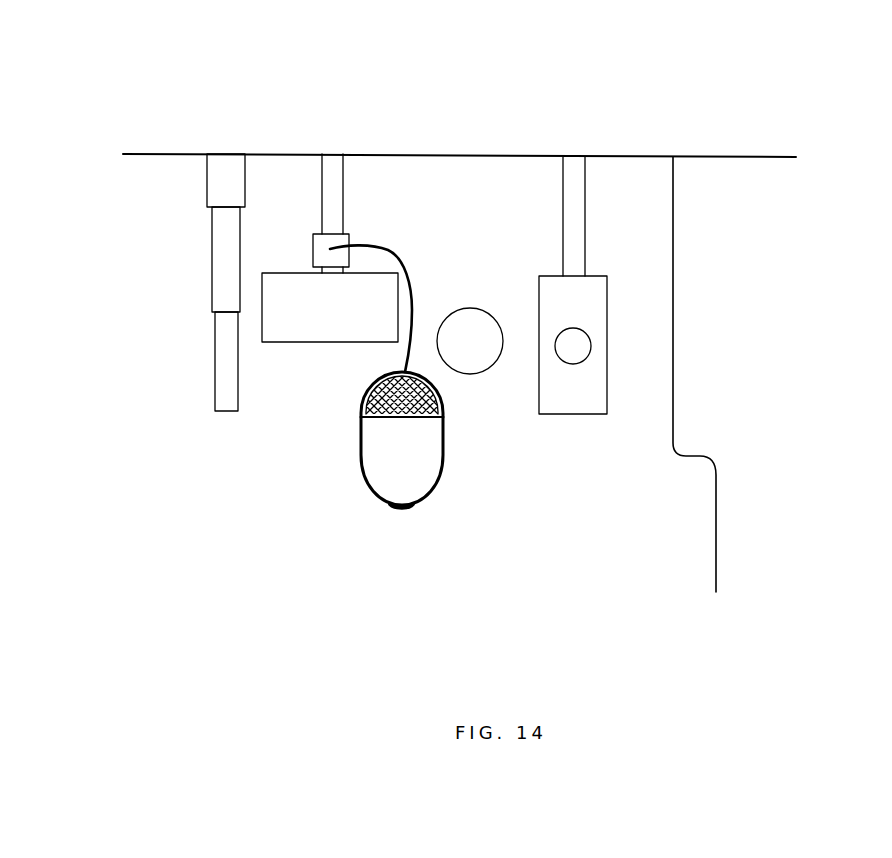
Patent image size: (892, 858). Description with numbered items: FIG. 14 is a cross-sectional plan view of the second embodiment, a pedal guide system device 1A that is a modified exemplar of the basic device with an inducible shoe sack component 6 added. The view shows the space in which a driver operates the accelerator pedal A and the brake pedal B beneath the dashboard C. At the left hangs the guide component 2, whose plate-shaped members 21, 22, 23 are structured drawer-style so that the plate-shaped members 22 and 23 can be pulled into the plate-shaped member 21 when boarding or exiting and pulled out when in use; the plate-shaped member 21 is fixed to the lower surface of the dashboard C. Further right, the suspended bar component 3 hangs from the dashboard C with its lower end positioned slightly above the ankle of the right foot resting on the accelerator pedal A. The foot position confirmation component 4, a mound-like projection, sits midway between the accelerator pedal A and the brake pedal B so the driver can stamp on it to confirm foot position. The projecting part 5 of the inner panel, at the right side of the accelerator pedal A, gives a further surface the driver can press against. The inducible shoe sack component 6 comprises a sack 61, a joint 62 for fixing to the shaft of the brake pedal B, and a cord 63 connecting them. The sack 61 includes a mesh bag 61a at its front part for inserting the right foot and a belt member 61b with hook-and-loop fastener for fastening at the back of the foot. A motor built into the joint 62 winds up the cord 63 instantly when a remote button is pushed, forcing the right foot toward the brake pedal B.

The pedal guide system device 1A is at (545, 100).
The guide component 2 is at (228, 148).
The plate-shaped member 21 is at (207, 208).
The plate-shaped member 22 is at (213, 258).
The plate-shaped member 23 is at (215, 360).
The suspended bar component 3 is at (573, 364).
The foot position confirmation component 4 is at (472, 374).
The projecting part of the inner panel 5 is at (750, 343).
The inducible shoe sack component 6 is at (440, 217).
The sack 61 is at (455, 600).
The mesh bag 61a is at (437, 404).
The belt member 61b is at (402, 510).
The joint 62 is at (350, 239).
The cord 63 is at (410, 307).
The accelerator pedal A is at (542, 415).
The brake pedal B is at (292, 343).
The dashboard C is at (492, 106).